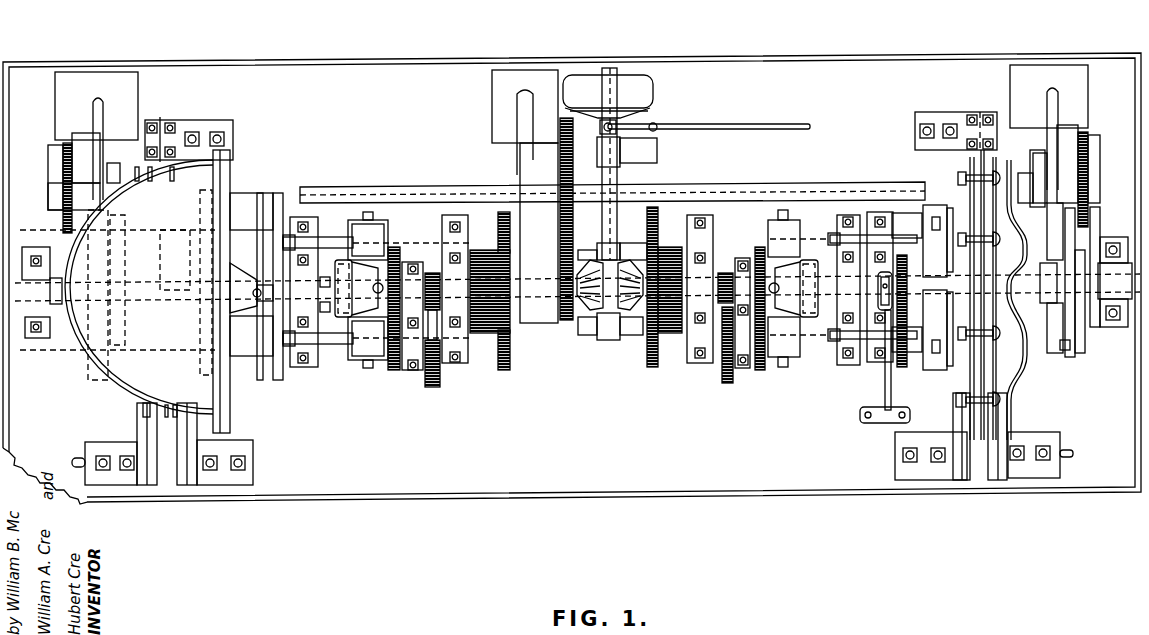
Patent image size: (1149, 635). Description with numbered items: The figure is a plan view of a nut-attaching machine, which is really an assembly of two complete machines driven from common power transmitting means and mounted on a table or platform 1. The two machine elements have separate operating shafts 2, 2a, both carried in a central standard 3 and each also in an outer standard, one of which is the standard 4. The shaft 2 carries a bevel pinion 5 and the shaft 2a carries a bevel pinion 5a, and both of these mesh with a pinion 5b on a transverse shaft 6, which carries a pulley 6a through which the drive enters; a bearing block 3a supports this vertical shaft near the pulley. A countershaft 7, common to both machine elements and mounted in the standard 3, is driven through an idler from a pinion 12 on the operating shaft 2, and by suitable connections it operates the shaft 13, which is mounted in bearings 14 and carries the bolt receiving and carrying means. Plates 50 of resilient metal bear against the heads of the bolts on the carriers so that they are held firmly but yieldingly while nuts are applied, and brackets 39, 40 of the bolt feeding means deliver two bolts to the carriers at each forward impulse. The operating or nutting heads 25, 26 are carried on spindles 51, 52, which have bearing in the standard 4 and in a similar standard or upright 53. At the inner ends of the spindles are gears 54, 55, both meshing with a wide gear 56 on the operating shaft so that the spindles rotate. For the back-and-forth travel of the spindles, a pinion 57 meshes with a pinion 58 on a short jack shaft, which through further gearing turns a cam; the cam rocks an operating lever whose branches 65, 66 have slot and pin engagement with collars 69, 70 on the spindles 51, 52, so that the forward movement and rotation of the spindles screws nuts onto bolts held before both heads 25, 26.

The table or platform 1 is at (572, 278).
The operating shaft 2 is at (516, 302).
The operating shaft 2a is at (648, 333).
The central standard 3 is at (541, 324).
The bearing block 3a is at (656, 141).
The standard 4 is at (457, 365).
The bevel pinion 5 is at (587, 268).
The bevel pinion 5a is at (641, 250).
The pinion 5b is at (600, 341).
The shaft 6 is at (617, 184).
The pulley 6a is at (637, 78).
The countershaft 7 is at (687, 190).
The pinion 12 is at (566, 330).
The shaft 13 is at (1124, 330).
The bearings 14 is at (1116, 237).
The operating or nutting head 25 is at (948, 366).
The operating or nutting head 26 is at (950, 205).
The bracket 39 is at (900, 446).
The bracket 40 is at (1053, 440).
The resilient plates 50 is at (1016, 390).
The spindle 51 is at (334, 348).
The spindle 52 is at (330, 237).
The standard or upright 53 is at (866, 360).
The gear 54 is at (508, 372).
The gear 55 is at (503, 212).
The wide gear 56 is at (491, 332).
The pinion 57 is at (430, 272).
The pinion 58 is at (432, 386).
The branch of operating lever 65 is at (356, 370).
The branch of operating lever 66 is at (656, 126).
The collar 69 is at (372, 365).
The collar 70 is at (378, 228).